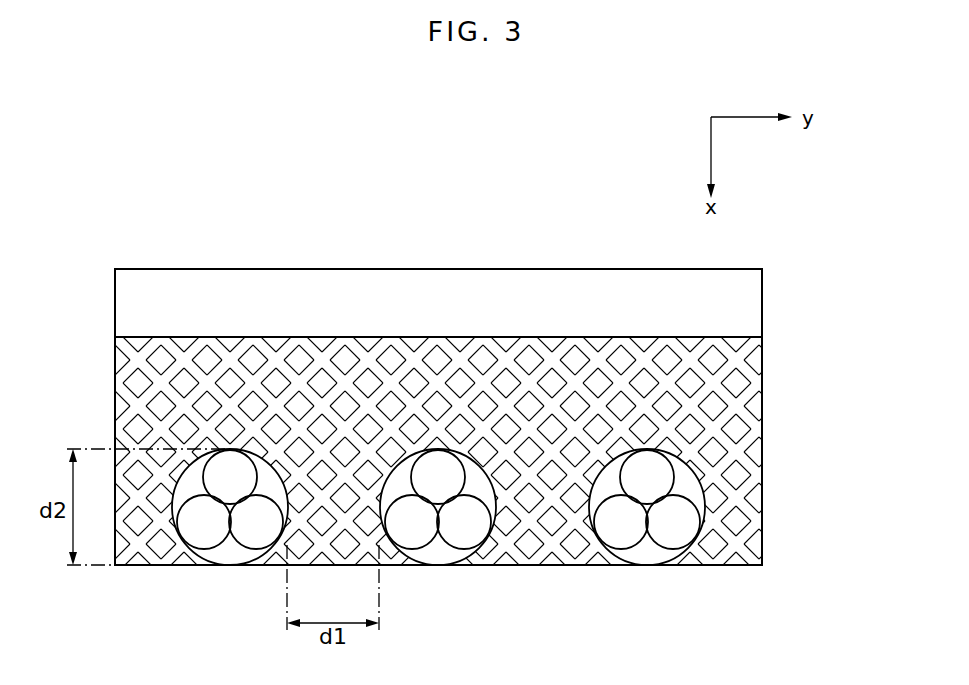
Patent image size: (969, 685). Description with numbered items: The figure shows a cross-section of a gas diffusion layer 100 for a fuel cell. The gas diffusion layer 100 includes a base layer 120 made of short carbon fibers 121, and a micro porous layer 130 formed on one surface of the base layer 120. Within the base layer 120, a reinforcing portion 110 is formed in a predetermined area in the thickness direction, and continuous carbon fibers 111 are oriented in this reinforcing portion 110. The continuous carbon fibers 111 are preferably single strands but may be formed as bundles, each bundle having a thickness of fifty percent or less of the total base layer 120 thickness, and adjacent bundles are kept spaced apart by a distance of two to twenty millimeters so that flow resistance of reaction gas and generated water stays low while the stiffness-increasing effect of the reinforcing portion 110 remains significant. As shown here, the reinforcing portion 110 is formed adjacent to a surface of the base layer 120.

The gas diffusion layer 100 is at (385, 258).
The reinforcing portion 110 is at (776, 449).
The continuous carbon fibers 111 is at (674, 523).
The base layer 120 is at (848, 337).
The short carbon fibers 121 is at (567, 515).
The micro porous layer 130 is at (776, 270).